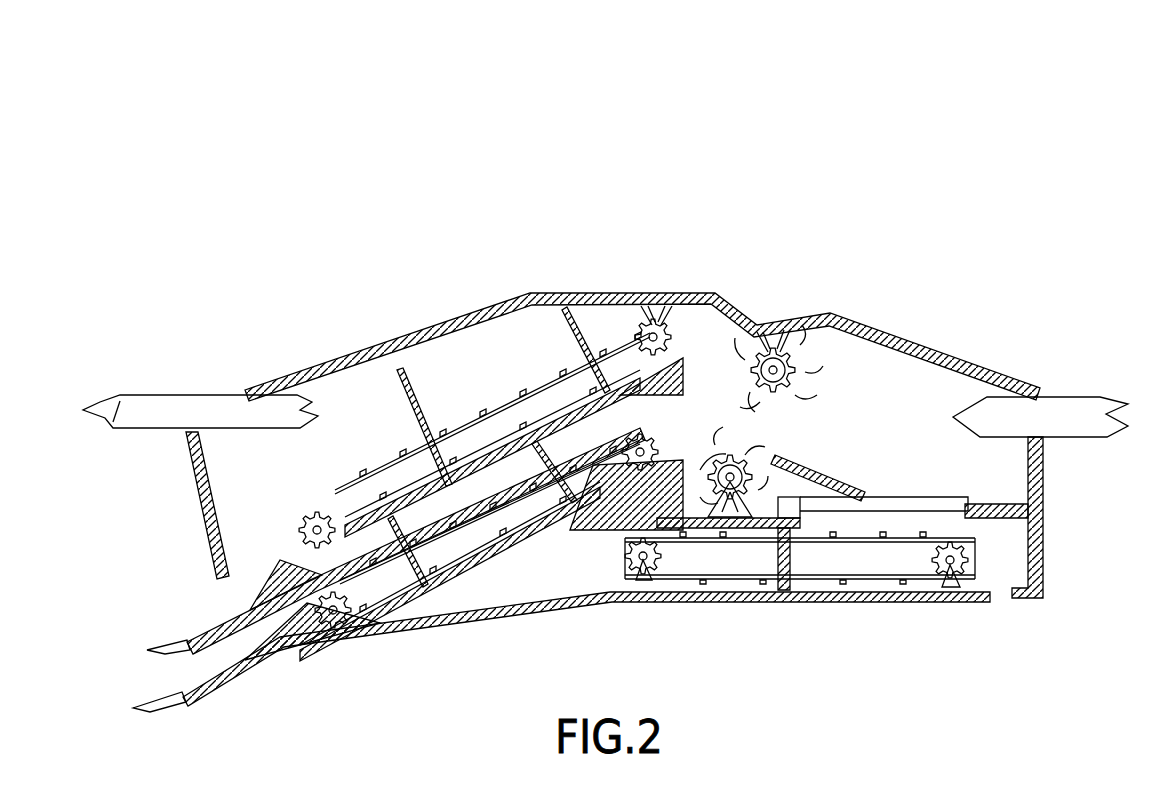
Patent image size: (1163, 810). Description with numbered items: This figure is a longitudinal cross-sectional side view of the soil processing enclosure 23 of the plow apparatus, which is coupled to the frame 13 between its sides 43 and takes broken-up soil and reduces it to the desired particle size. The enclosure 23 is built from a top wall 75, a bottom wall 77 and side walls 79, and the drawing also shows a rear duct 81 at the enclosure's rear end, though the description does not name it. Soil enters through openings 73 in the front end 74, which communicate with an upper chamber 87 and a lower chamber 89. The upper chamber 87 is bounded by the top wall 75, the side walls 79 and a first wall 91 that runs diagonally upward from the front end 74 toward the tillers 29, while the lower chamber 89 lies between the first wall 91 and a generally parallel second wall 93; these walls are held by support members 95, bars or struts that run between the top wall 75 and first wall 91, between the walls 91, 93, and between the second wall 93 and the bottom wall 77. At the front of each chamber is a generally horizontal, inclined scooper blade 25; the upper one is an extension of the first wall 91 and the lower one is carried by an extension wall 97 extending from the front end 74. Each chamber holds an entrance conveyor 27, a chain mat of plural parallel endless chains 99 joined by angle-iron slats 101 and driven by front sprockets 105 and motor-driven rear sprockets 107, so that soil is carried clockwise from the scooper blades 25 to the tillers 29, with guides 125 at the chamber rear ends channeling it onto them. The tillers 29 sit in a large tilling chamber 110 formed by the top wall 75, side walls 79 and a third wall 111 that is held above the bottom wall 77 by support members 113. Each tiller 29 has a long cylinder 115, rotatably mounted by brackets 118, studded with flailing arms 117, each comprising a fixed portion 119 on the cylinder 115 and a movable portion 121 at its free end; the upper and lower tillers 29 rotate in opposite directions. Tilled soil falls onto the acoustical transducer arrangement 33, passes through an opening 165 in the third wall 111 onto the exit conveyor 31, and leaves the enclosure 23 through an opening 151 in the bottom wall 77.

The frame 13 is at (143, 403).
The sides 43 is at (197, 403).
The soil processing enclosure 23 is at (607, 293).
The upper chamber 87 is at (333, 407).
The top wall 75 is at (400, 470).
The tilling chamber 110 is at (733, 325).
The cylinder 115 is at (820, 313).
The outlet duct 81 is at (1000, 380).
The front end 74 is at (187, 460).
The side walls 79 is at (183, 440).
The openings 73 is at (213, 577).
The opening 151 is at (1022, 592).
The bottom wall 77 is at (580, 603).
The extension wall 97 is at (207, 680).
The scooper blades 25 is at (158, 702).
The slats 101 is at (363, 477).
The entrance conveyors 27 is at (387, 443).
The support members 95 is at (418, 395).
The first wall 91 is at (523, 437).
The second wall 93 is at (450, 580).
The sprockets 105 is at (290, 523).
The endless chains 99 is at (333, 513).
The lower chamber 89 is at (333, 572).
The rear sprockets 107 is at (648, 430).
The guides 125 is at (712, 300).
The opening 165 is at (910, 503).
The tillers 29 is at (822, 352).
The brackets 118 is at (780, 317).
The flailing arms 117 is at (812, 383).
The fixed portion 119 is at (808, 397).
The third wall 111 is at (745, 523).
The movable portion 121 is at (770, 447).
The acoustical transducer arrangement 33 is at (827, 473).
The exit conveyor 31 is at (867, 573).
The support members 113 is at (790, 582).